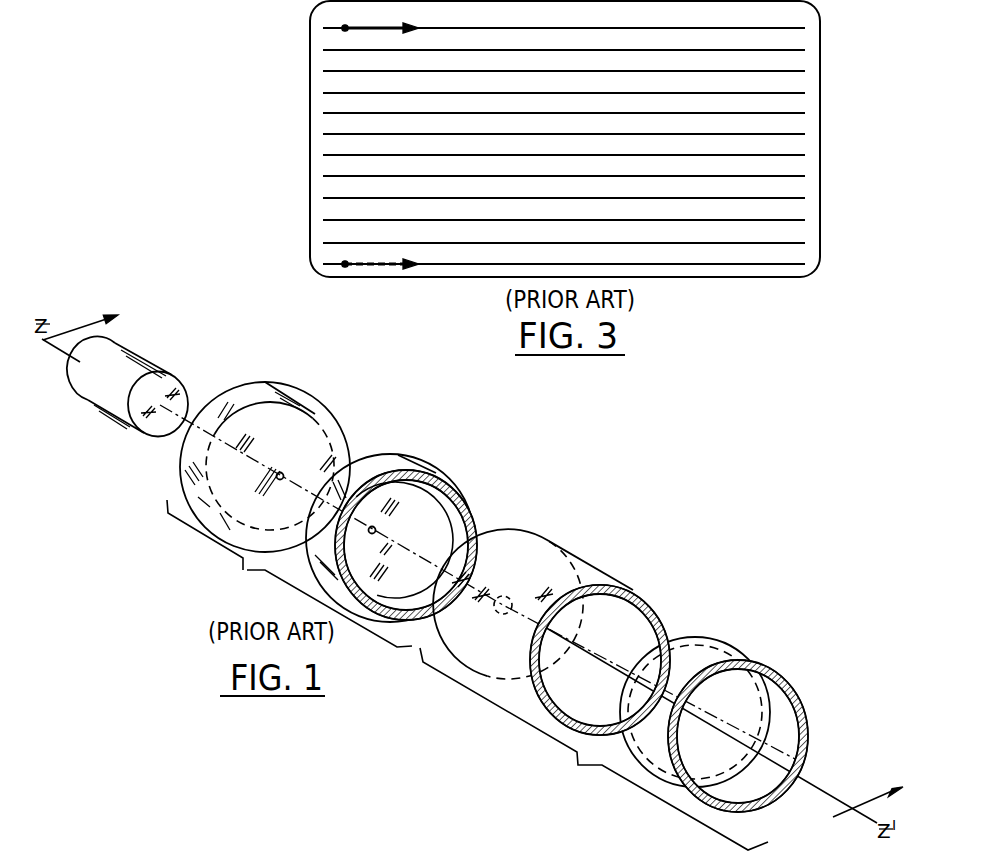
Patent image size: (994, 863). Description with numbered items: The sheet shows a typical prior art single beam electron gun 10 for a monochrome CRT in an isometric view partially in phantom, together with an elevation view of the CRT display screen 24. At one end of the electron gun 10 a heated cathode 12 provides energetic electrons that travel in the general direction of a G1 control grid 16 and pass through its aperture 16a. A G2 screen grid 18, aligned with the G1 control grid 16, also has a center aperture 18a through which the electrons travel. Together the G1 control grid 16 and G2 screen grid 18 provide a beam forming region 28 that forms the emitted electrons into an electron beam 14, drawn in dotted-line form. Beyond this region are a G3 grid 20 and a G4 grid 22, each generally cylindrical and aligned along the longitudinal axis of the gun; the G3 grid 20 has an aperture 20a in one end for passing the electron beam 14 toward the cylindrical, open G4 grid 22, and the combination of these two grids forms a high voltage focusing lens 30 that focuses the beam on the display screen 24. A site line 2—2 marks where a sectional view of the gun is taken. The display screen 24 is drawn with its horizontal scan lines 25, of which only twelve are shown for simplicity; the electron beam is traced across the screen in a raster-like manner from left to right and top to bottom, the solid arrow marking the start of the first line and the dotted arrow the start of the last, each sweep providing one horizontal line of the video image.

In FIG. 1, the site line 2 is at (459, 581).
In FIG. 1, the single beam electron gun 10 is at (478, 582).
In FIG. 1, the heated cathode 12 is at (142, 358).
In FIG. 1, the electron beam 14 is at (773, 747).
In FIG. 1, the G1 control grid 16 is at (277, 387).
In FIG. 1, the aperture 16a is at (284, 476).
In FIG. 1, the G2 screen grid 18 is at (384, 460).
In FIG. 1, the center aperture 18a is at (376, 530).
In FIG. 1, the G3 grid 20 is at (537, 534).
In FIG. 1, the aperture 20a is at (510, 593).
In FIG. 1, the G4 grid 22 is at (725, 637).
In FIG. 3, the display screen 24 is at (323, 194).
In FIG. 3, the horizontal scan lines 25 is at (342, 156).
In FIG. 1, the beam forming region 28 is at (289, 573).
In FIG. 1, the high voltage focusing lens 30 is at (594, 749).